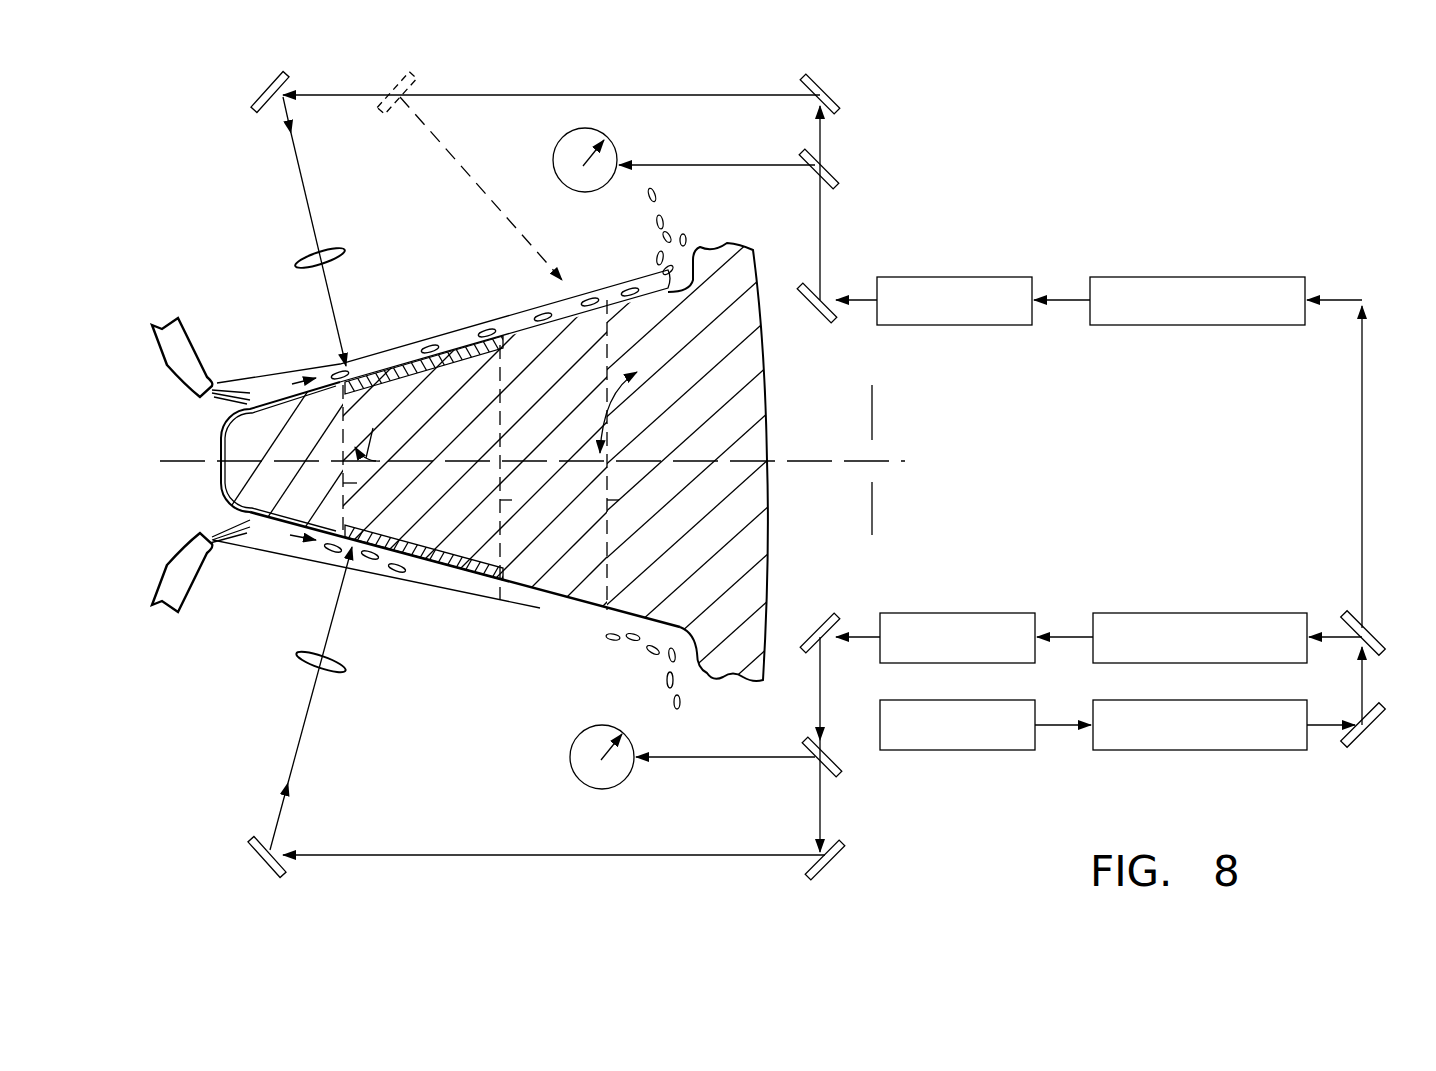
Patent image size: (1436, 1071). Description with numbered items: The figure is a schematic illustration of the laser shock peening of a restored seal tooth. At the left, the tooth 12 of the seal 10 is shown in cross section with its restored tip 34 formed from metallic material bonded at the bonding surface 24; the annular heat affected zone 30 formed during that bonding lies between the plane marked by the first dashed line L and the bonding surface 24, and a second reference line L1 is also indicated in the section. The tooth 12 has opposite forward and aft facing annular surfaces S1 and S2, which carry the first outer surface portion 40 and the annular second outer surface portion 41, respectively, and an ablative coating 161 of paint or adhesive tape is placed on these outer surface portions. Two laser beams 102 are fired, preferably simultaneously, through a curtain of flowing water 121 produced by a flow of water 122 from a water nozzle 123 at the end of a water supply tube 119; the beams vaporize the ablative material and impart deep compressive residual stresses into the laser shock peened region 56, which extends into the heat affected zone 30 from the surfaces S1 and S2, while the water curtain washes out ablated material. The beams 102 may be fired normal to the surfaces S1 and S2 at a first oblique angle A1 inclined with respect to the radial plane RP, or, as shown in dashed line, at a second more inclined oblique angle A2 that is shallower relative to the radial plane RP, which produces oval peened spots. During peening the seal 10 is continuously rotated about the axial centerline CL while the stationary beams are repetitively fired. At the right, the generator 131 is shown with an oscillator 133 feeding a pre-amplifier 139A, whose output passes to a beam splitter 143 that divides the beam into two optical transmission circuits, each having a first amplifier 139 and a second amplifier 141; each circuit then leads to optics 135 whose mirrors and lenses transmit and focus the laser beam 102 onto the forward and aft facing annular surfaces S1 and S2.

The seal 10 is at (743, 407).
The tooth 12 is at (520, 740).
The bonding surface 24 is at (347, 483).
The annular heat affected zone 30 is at (530, 577).
The tip 34 is at (224, 496).
The first outer surface portion 40 is at (497, 580).
The annular second outer surface portion 41 is at (407, 377).
The laser shock peened region 56 is at (403, 385).
The laser beams 102 is at (302, 185).
The water supply tube 119 is at (200, 555).
The curtain of flowing water 121 is at (440, 337).
The flow of water 122 is at (228, 377).
The water nozzle 123 is at (163, 610).
The generator 131 is at (1093, 471).
The oscillator 133 is at (985, 750).
The optics 135 is at (849, 156).
The first amplifier 139 is at (1181, 277).
The pre-amplifier 139A is at (1158, 750).
The second amplifier 141 is at (925, 277).
The beam splitter 143 is at (1403, 694).
The ablative coating 161 is at (523, 310).
The first oblique angle A1 is at (373, 469).
The second more inclined oblique angle A2 is at (617, 393).
The axial centerline CL is at (873, 423).
The first dashed line L is at (507, 502).
The length L1 is at (609, 502).
The radial plane RP is at (210, 447).
The forward facing annular surface S1 is at (580, 612).
The aft facing annular surface S2 is at (460, 340).